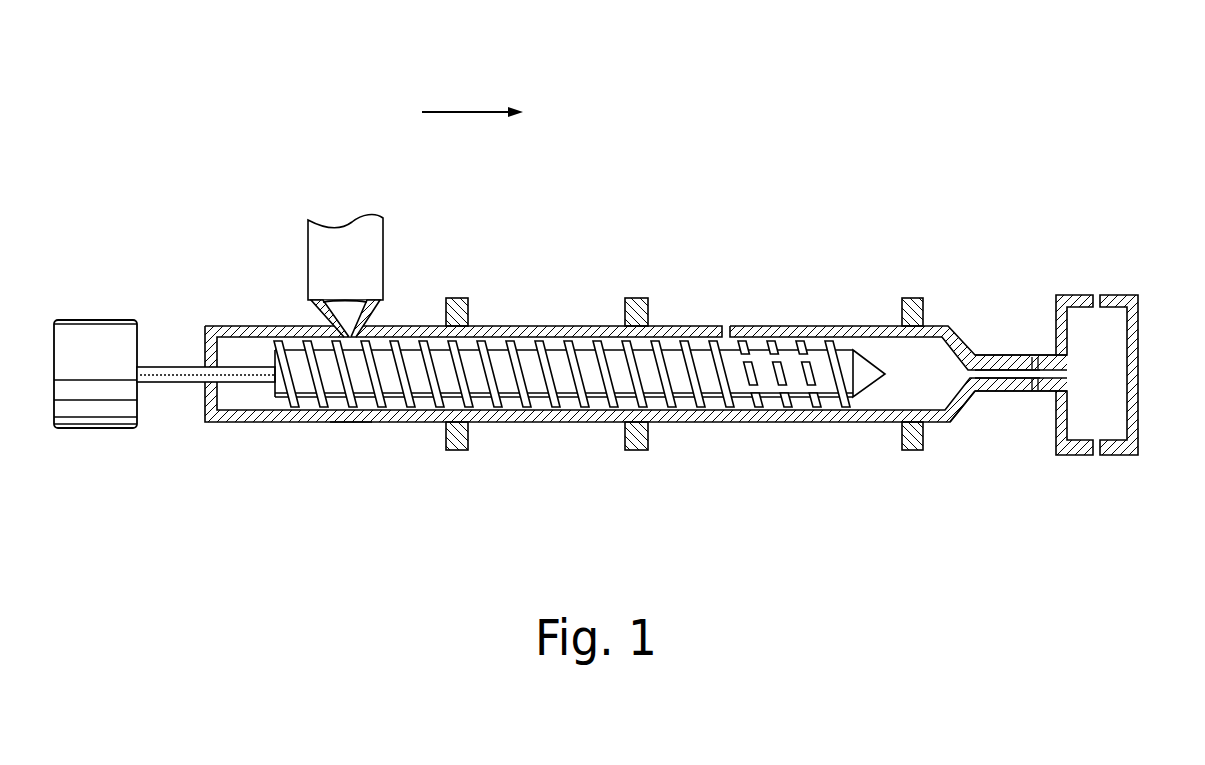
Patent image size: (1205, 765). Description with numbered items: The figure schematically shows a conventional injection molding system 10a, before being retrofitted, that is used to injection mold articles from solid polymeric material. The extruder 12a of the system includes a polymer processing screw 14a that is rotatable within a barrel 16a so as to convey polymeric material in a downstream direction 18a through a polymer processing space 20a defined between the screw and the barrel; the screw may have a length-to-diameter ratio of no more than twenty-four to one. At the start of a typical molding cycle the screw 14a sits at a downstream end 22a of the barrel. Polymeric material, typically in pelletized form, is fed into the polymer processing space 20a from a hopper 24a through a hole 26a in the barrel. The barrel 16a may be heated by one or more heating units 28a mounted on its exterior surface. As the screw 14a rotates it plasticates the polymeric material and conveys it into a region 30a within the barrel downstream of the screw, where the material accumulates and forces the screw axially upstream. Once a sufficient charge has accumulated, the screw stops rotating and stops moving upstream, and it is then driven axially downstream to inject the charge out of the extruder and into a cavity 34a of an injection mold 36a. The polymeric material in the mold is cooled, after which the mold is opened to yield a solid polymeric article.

The injection molding system 10a is at (567, 116).
The extruder 12a is at (538, 434).
The polymer processing screw 14a is at (552, 355).
The barrel 16a is at (350, 422).
The downstream direction 18a is at (472, 97).
The polymer processing space 20a is at (490, 343).
The downstream end of the barrel 22a is at (965, 454).
The hopper 24a is at (350, 228).
The hole 26a is at (345, 322).
The heating unit 28a is at (456, 446).
The region 30a is at (945, 356).
The cavity 34a is at (1119, 353).
The injection mold 36a is at (1140, 325).